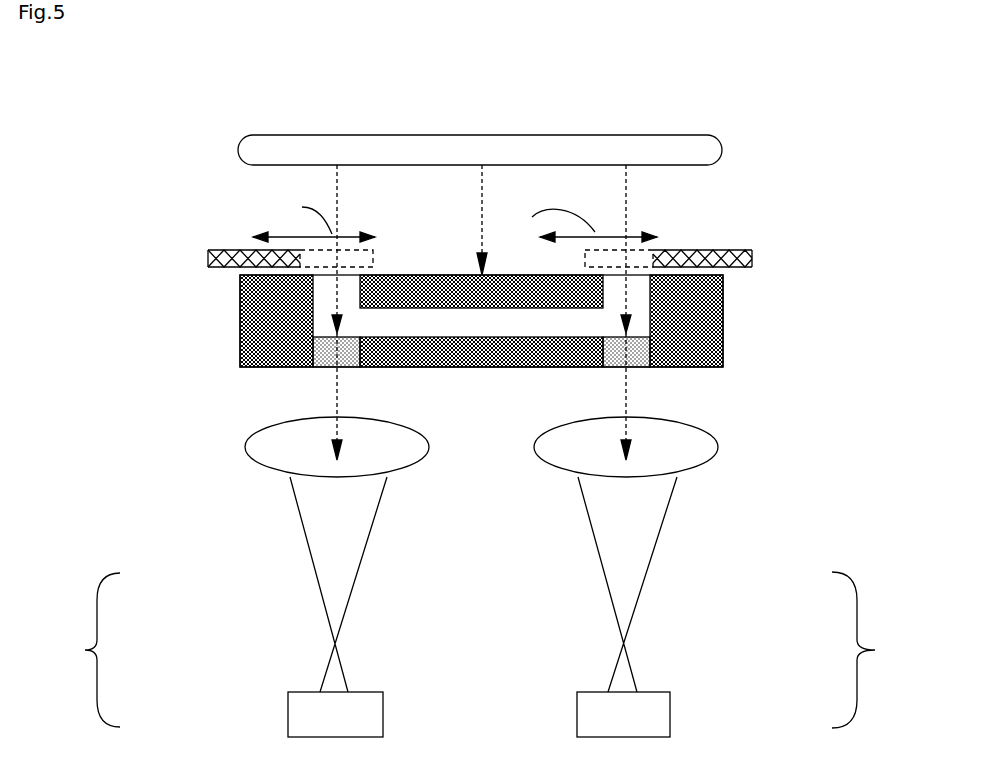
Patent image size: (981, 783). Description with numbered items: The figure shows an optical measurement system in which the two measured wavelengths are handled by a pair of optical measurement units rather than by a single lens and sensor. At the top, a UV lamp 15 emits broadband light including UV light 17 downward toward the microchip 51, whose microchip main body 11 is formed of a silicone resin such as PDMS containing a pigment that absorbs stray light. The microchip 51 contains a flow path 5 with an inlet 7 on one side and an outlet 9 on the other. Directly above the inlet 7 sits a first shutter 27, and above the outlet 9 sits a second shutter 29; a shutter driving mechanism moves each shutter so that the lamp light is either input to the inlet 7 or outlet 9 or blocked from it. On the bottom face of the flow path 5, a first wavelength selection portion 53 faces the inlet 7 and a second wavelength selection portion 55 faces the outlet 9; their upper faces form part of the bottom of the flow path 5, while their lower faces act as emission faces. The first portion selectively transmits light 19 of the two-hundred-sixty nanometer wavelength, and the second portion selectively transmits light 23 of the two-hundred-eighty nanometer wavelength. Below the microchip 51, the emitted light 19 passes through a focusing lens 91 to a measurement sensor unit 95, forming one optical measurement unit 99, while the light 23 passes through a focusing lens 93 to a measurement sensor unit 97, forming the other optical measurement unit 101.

The flow path 5 is at (498, 335).
The inlet 7 is at (331, 282).
The outlet 9 is at (652, 292).
The microchip main body 11 is at (240, 336).
The UV lamp 15 is at (288, 150).
The UV light 17 is at (628, 192).
The light having a first wavelength 19 is at (340, 393).
The light having a second wavelength 23 is at (627, 390).
The first shutter 27 is at (240, 247).
The second shutter 29 is at (678, 250).
The microchip 51 is at (732, 346).
The first wavelength selection portion 53 is at (314, 364).
The second wavelength selection portion 55 is at (635, 367).
The focusing lens 91 is at (263, 457).
The focusing lens 93 is at (680, 458).
The measurement sensor unit 95 is at (313, 717).
The measurement sensor unit 97 is at (652, 718).
The optical measurement unit 99 is at (232, 577).
The optical measurement unit 101 is at (735, 577).